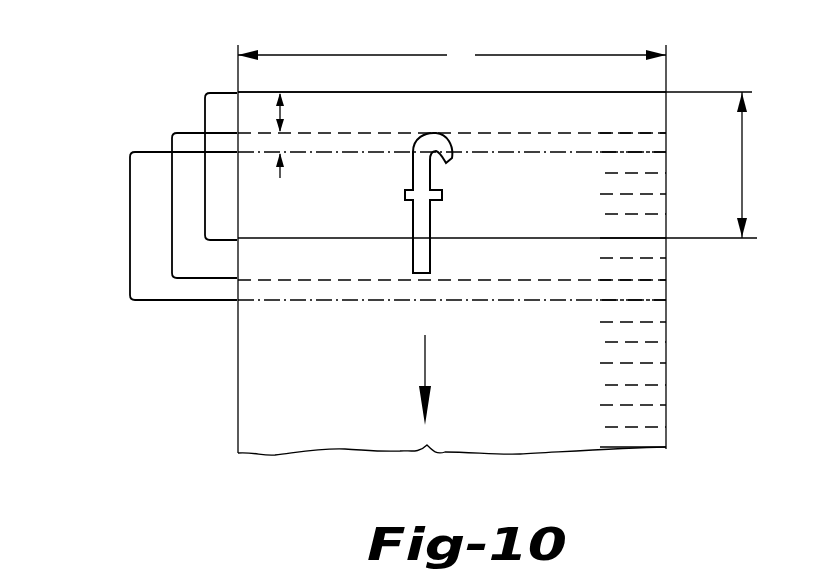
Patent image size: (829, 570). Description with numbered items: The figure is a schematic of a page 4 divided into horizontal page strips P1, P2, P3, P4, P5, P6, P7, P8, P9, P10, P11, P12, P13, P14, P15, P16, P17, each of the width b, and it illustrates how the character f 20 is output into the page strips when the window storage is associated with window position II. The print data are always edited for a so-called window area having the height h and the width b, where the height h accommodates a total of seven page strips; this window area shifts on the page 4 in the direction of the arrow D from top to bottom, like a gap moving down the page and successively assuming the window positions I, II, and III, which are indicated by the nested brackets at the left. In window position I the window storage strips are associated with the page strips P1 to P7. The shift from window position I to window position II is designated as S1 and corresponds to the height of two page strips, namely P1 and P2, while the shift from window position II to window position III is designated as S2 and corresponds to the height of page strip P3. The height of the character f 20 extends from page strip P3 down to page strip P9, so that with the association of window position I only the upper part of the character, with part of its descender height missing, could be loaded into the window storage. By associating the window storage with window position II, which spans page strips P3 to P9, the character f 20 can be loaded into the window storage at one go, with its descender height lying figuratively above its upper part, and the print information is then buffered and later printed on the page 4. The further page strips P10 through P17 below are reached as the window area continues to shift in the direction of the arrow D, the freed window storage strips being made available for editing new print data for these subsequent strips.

The character f 20 is at (426, 153).
The page 4 is at (506, 456).
The window position I is at (205, 172).
The window position II is at (172, 215).
The window position III is at (130, 228).
The width b is at (452, 52).
The height h is at (739, 165).
The shift from window position I to window position II S1 is at (284, 108).
The shift from window position II to window position III S2 is at (284, 147).
The arrow D is at (426, 362).
The page strip P1 is at (468, 101).
The page strip P2 is at (649, 122).
The page strip P3 is at (649, 142).
The page strip P4 is at (651, 162).
The page strip P5 is at (649, 183).
The page strip P6 is at (651, 203).
The page strip P7 is at (649, 226).
The page strip P8 is at (649, 249).
The page strip P9 is at (649, 269).
The page strip P10 is at (655, 291).
The page strip P11 is at (655, 310).
The page strip P12 is at (657, 331).
The page strip P13 is at (655, 352).
The page strip P14 is at (657, 373).
The page strip P15 is at (655, 394).
The page strip P16 is at (657, 415).
The page strip P17 is at (655, 436).